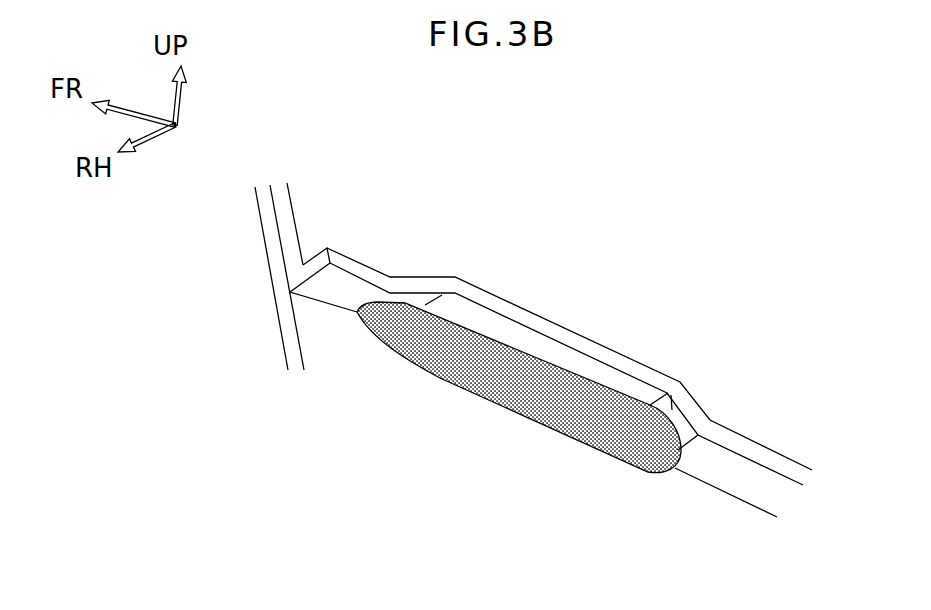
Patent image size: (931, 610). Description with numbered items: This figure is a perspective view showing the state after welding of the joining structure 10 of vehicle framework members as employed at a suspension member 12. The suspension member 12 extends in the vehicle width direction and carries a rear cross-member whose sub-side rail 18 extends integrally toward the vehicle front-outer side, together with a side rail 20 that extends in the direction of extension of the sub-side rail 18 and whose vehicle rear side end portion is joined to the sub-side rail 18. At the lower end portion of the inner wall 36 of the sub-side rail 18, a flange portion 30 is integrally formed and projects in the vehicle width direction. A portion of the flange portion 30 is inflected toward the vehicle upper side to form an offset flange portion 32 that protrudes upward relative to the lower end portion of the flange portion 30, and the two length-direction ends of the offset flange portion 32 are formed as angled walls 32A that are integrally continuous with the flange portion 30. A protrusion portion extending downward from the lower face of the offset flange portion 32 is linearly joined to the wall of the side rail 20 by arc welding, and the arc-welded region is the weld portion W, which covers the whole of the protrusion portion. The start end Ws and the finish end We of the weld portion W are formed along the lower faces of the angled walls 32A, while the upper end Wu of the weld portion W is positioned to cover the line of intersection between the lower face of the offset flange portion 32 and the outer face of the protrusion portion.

The joining structure 10 is at (562, 478).
The suspension member 12 is at (668, 302).
The sub-side rail 18 is at (300, 190).
The side rail 20 is at (280, 330).
The flange portion 30 is at (333, 297).
The offset flange portion 32 is at (562, 353).
The angled wall 32A is at (427, 303).
The inner wall 36 is at (313, 223).
The weld portion W is at (502, 415).
The start end of weld portion Ws is at (400, 303).
The upper end of weld portion Wu is at (490, 332).
The finish end of weld portion We is at (668, 427).